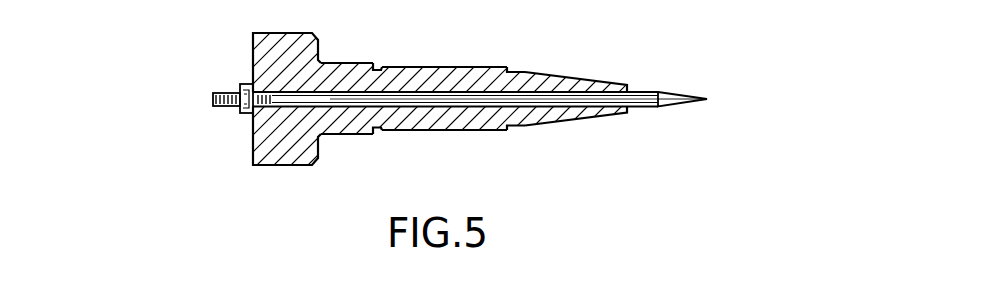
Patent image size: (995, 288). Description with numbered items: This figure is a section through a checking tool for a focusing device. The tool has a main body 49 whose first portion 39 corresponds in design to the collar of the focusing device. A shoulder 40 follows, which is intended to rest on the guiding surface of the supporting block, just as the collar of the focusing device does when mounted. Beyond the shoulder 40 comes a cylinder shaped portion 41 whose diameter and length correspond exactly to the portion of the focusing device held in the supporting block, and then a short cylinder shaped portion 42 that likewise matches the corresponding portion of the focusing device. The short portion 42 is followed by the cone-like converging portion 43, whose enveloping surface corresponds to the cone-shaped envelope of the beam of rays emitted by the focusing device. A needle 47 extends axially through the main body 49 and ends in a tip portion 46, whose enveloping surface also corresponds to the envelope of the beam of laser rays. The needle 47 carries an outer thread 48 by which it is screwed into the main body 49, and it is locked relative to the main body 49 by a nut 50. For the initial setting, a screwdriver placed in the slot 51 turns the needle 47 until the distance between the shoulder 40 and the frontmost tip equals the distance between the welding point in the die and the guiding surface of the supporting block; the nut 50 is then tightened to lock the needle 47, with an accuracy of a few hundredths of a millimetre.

The first portion 39 is at (342, 62).
The shoulder 40 is at (382, 64).
The cylinder shaped portion 41 is at (445, 67).
The short cylinder shaped portion 42 is at (518, 71).
The cone-like converging portion 43 is at (570, 78).
The tip portion 46 is at (675, 92).
The needle 47 is at (466, 100).
The outer thread 48 is at (250, 114).
The main body 49 is at (423, 140).
The nut 50 is at (242, 84).
The slot 51 is at (213, 104).